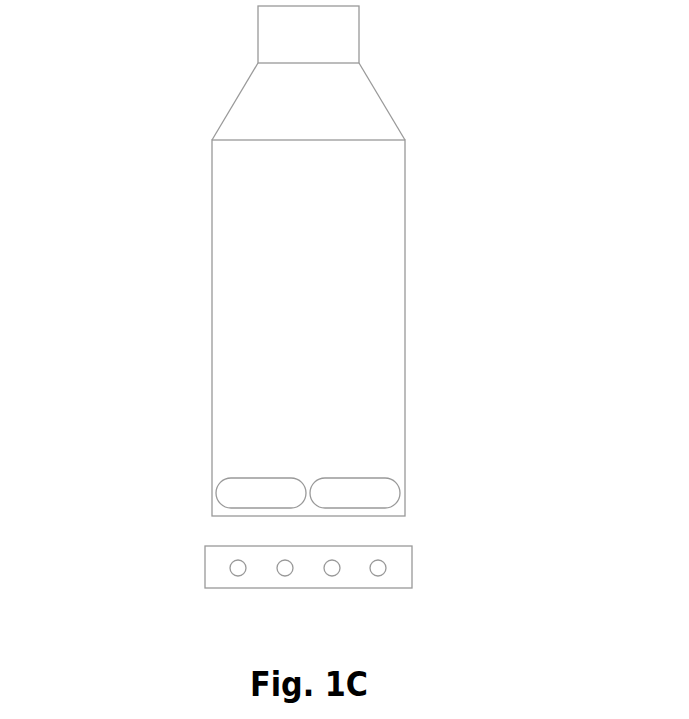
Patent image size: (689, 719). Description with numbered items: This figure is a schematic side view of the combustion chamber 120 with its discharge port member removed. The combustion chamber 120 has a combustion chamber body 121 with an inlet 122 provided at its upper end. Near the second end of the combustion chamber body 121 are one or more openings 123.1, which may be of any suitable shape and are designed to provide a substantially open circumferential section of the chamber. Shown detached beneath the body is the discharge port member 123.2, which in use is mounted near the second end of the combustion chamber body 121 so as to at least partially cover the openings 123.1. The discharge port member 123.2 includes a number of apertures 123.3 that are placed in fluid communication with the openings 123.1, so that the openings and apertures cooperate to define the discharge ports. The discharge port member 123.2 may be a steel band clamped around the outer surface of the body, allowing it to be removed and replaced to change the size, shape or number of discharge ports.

The combustion chamber 120 is at (198, 113).
The combustion chamber body 121 is at (222, 167).
The inlet 122 is at (268, 37).
The openings 123.1 is at (240, 497).
The discharge port member 123.2 is at (397, 576).
The apertures 123.3 is at (232, 567).